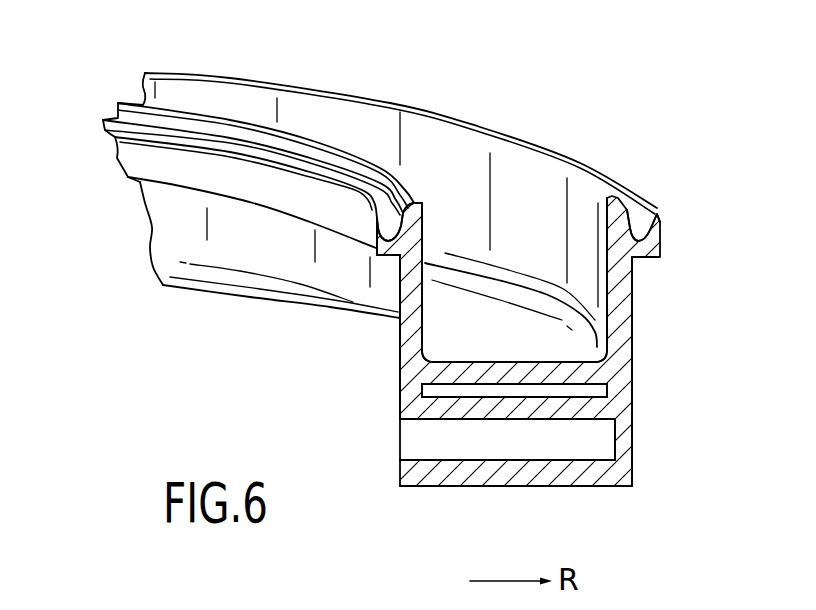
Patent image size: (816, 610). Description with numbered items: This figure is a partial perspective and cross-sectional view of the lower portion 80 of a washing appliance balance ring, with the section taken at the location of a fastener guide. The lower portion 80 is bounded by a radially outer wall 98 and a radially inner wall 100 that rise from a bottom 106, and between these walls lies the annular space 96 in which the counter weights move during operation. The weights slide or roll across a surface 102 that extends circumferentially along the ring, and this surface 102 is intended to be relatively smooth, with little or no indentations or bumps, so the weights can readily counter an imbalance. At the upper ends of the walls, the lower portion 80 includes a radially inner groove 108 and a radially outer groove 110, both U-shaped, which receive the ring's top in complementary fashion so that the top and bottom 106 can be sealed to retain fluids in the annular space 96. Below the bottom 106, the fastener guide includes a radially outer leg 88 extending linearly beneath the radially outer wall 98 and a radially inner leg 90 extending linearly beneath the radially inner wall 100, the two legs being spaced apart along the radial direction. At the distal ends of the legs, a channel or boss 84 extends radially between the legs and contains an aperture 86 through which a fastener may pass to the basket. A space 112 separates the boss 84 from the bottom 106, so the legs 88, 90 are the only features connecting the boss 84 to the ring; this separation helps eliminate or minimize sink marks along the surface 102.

The lower portion 80 is at (503, 77).
The boss 84 is at (493, 478).
The aperture 86 is at (599, 440).
The radially outer leg 88 is at (625, 398).
The radially inner leg 90 is at (407, 405).
The annular space 96 is at (522, 250).
The radially outer wall 98 is at (408, 282).
The radially inner wall 100 is at (623, 295).
The surface 102 is at (517, 355).
The bottom 106 is at (458, 376).
The radially inner groove 108 is at (388, 216).
The radially outer groove 110 is at (640, 203).
The space 112 is at (428, 390).